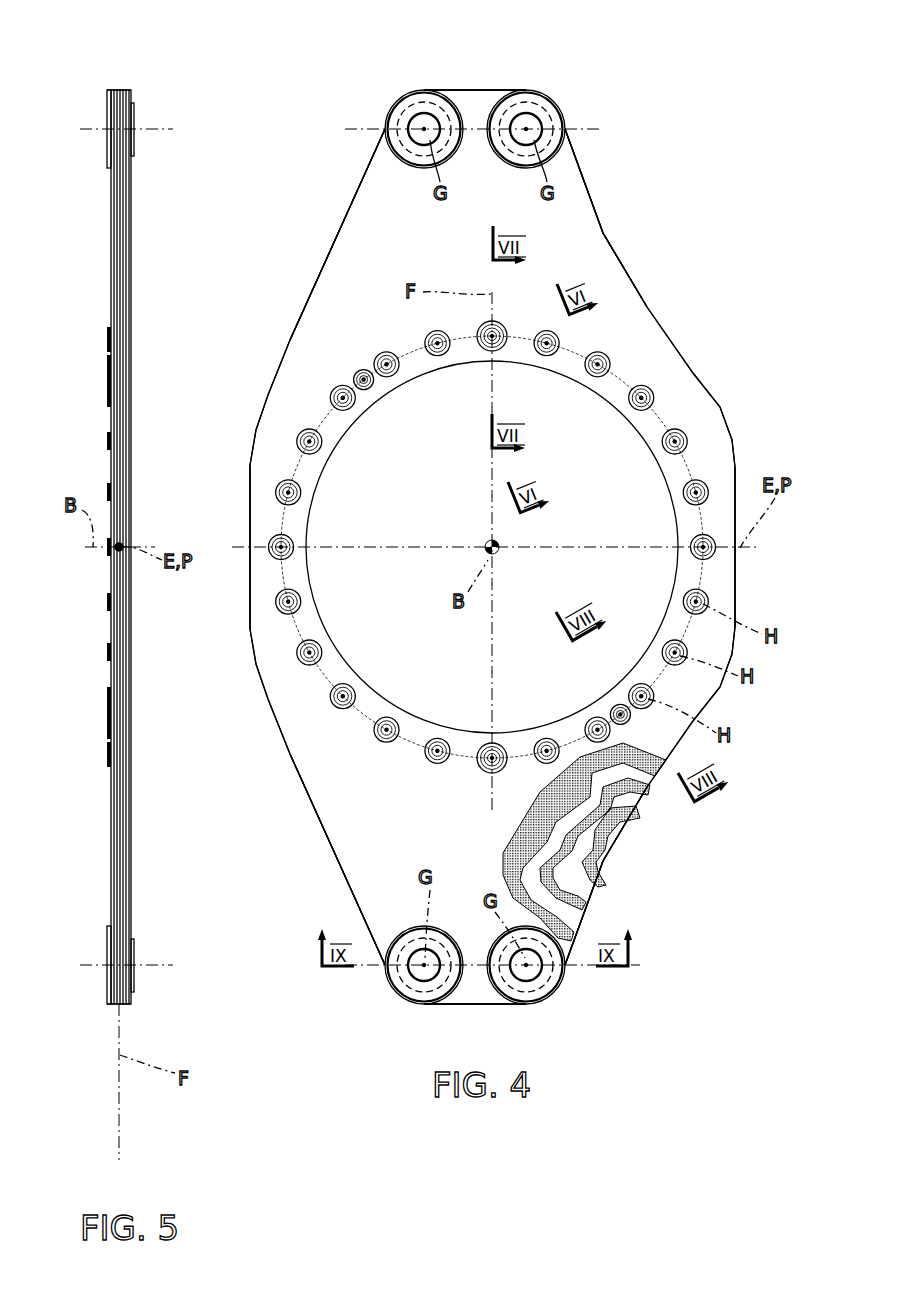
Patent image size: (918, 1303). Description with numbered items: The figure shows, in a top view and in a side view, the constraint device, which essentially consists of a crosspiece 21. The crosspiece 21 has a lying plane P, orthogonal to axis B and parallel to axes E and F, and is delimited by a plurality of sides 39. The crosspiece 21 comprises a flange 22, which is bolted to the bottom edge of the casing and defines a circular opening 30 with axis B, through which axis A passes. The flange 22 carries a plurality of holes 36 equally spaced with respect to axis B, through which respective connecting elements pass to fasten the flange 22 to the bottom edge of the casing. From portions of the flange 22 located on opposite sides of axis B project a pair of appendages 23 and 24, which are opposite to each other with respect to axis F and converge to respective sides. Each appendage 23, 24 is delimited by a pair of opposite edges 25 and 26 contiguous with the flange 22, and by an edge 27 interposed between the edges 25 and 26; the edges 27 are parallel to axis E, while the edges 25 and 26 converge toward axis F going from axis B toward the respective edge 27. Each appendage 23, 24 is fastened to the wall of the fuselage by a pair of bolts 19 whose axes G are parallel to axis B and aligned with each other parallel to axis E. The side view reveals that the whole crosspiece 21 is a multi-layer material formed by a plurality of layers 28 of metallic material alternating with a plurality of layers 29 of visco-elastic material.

In FIG. 4, the bolt 19 is at (417, 105).
In FIG. 4, the crosspiece 21 is at (642, 212).
In FIG. 5, the crosspiece 21 is at (120, 536).
In FIG. 4, the flange 22 is at (684, 408).
In FIG. 5, the flange 22 is at (138, 380).
In FIG. 4, the appendage 23 is at (566, 178).
In FIG. 5, the appendage 23 is at (109, 115).
In FIG. 4, the appendage 24 is at (376, 866).
In FIG. 5, the appendage 24 is at (124, 988).
In FIG. 4, the edge 25 is at (386, 128).
In FIG. 4, the edge 26 is at (569, 128).
In FIG. 4, the edge 27 is at (465, 87).
In FIG. 5, the edge 27 is at (118, 88).
In FIG. 5, the layer of metallic material 28 is at (113, 193).
In FIG. 5, the layer of visco-elastic material 29 is at (113, 277).
In FIG. 4, the circular opening 30 is at (408, 385).
In FIG. 4, the hole 36 is at (596, 377).
In FIG. 4, the side 39 is at (247, 576).
In FIG. 5, the side 39 is at (108, 577).